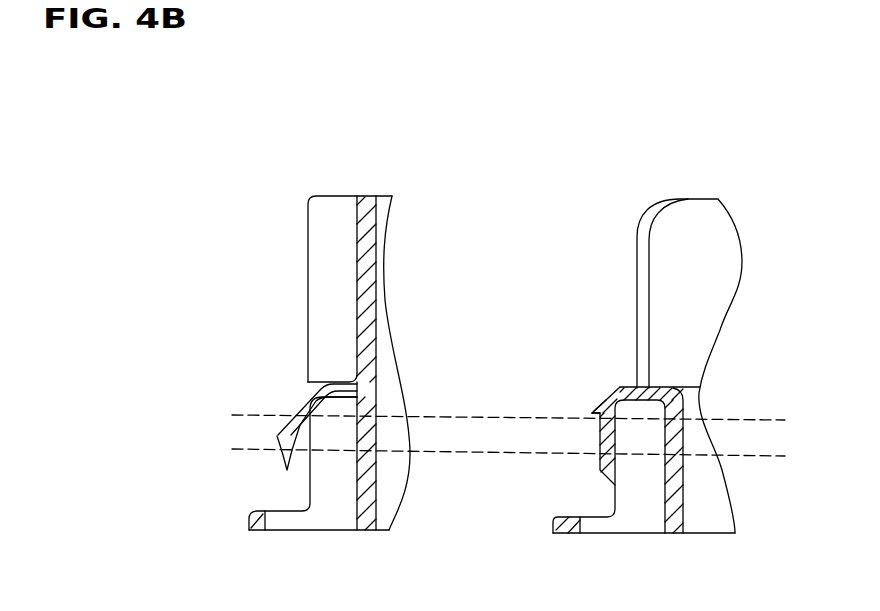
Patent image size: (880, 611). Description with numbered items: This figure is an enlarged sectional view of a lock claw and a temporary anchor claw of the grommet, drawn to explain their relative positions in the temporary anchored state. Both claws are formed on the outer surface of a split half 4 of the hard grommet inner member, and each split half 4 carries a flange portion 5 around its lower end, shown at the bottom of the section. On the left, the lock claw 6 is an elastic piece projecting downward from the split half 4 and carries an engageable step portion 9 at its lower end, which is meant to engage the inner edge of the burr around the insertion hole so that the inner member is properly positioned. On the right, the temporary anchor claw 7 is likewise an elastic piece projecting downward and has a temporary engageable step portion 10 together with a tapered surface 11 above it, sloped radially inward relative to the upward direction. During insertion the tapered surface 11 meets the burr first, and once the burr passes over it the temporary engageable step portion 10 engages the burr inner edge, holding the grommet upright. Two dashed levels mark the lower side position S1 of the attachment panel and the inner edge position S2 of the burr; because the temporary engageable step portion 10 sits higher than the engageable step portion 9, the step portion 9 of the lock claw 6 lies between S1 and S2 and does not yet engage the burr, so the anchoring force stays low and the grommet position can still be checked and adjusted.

The split half 4 is at (367, 257).
The flange portion 5 is at (249, 519).
The lock claw 6 is at (275, 430).
The temporary anchor claw 7 is at (600, 399).
The engageable step portion 9 is at (281, 450).
The temporary engageable step portion 10 is at (592, 416).
The tapered surface 11 is at (609, 390).
The lower side position of the attachment panel S1 is at (488, 446).
The inner edge position of the burr S2 is at (488, 413).